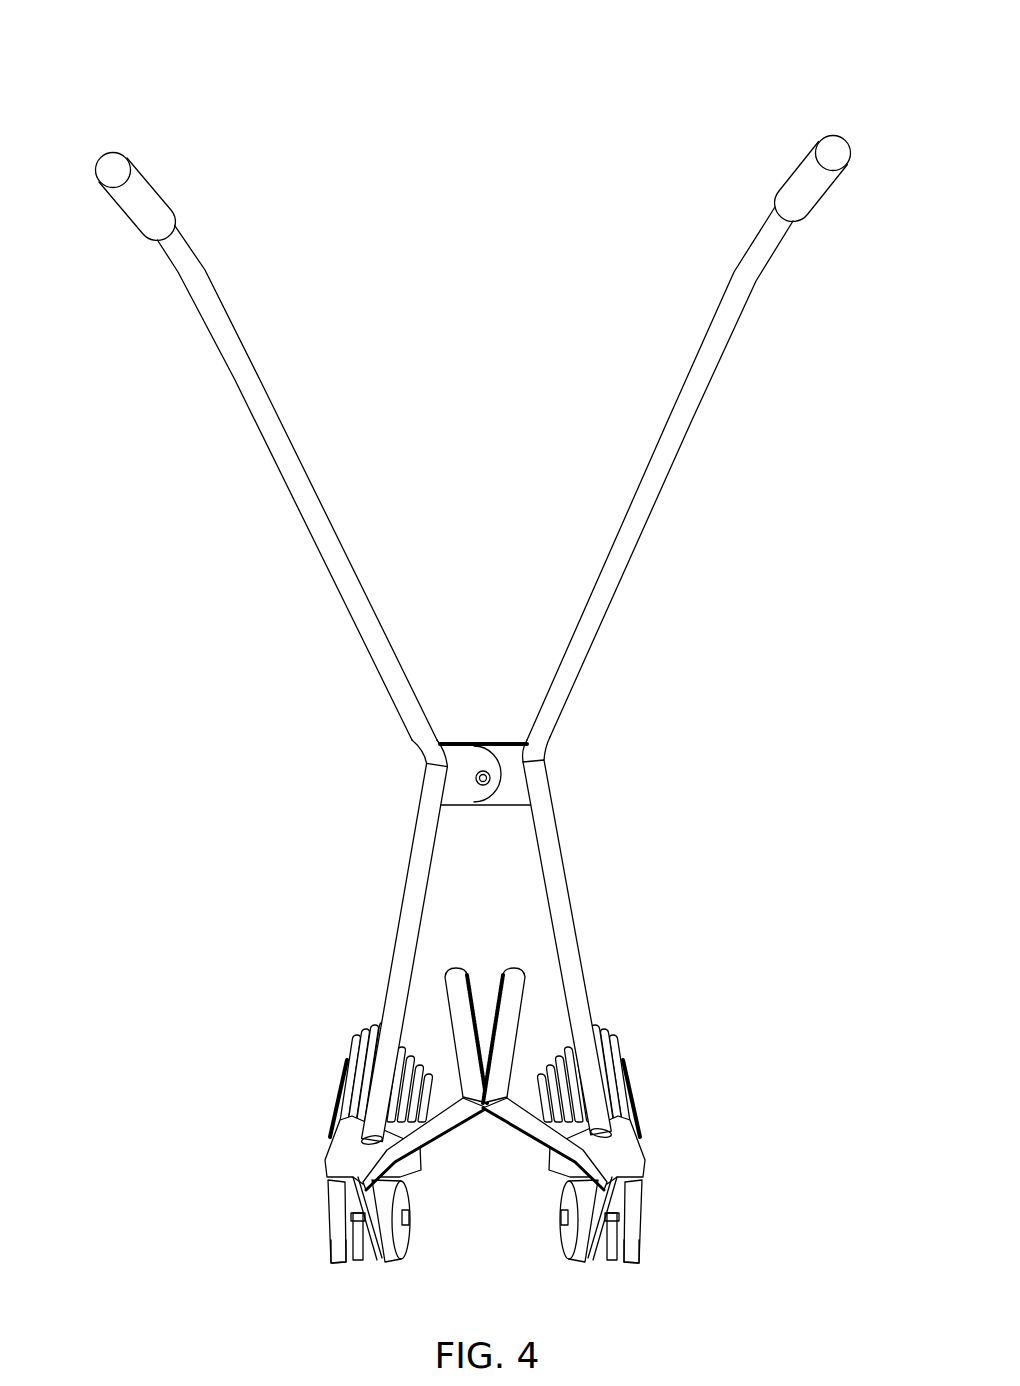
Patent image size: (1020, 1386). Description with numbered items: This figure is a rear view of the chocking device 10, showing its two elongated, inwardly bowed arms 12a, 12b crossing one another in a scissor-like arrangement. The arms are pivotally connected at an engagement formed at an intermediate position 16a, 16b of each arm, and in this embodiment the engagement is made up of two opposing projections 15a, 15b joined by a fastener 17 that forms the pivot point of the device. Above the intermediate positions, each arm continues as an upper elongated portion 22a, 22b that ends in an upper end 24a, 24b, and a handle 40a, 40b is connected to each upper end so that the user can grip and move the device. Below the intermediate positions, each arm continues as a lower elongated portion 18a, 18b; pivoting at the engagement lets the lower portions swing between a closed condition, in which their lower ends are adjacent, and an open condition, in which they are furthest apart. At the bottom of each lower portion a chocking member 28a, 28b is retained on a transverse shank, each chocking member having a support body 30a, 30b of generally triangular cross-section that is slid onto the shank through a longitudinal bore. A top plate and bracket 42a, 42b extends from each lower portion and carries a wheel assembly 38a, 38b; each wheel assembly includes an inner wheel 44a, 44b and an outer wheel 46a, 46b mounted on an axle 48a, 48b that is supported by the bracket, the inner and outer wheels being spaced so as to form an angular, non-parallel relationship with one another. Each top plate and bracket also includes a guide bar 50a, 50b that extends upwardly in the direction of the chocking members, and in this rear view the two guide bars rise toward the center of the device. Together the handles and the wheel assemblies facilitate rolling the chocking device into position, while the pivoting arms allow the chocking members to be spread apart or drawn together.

The chocking device 10 is at (204, 88).
The arm 12a is at (722, 371).
The arm 12b is at (226, 371).
The opposing projection 15a is at (500, 805).
The opposing projection 15b is at (470, 757).
The intermediate position 16a is at (545, 758).
The intermediate position 16b is at (424, 766).
The fastener 17 is at (484, 788).
The lower elongated portion 18a is at (566, 902).
The lower elongated portion 18b is at (402, 902).
The upper elongated portion 22a is at (693, 428).
The upper elongated portion 22b is at (263, 428).
The upper end 24a is at (757, 242).
The upper end 24b is at (195, 250).
The chocking member 28a is at (619, 1060).
The chocking member 28b is at (352, 1050).
The support body 30a is at (630, 1083).
The support body 30b is at (342, 1082).
The wheel assembly 38a is at (651, 1190).
The wheel assembly 38b is at (323, 1196).
The handle 40a is at (800, 186).
The handle 40b is at (152, 188).
The top plate and bracket 42a is at (619, 1198).
The top plate and bracket 42b is at (355, 1200).
The inner wheel 44a is at (569, 1243).
The inner wheel 44b is at (400, 1241).
The outer wheel 46a is at (638, 1252).
The outer wheel 46b is at (336, 1255).
The axle 48a is at (613, 1244).
The axle 48b is at (358, 1245).
The guide bar 50a is at (516, 976).
The guide bar 50b is at (452, 976).